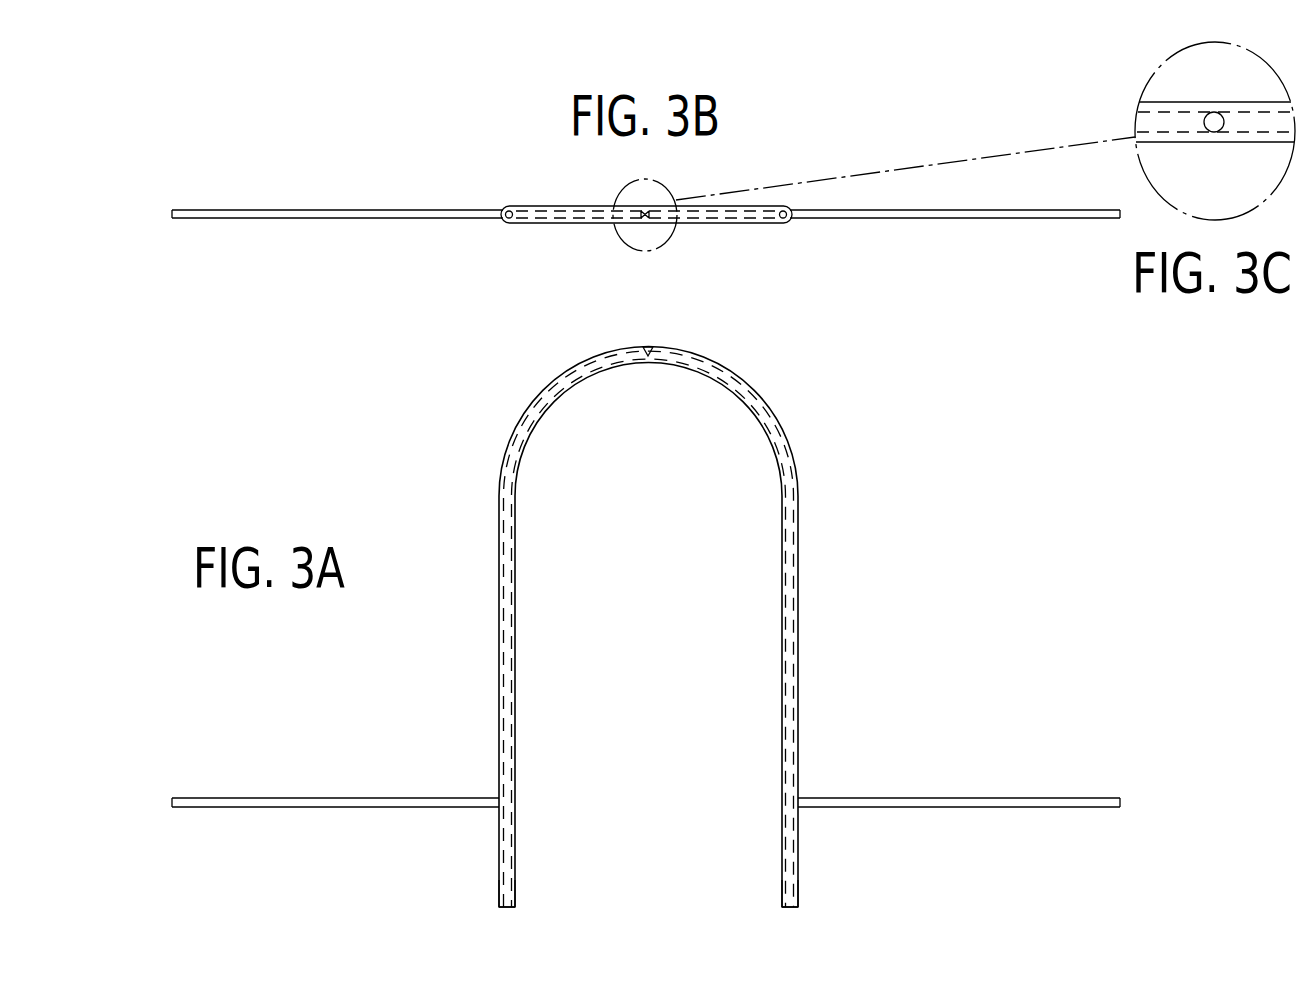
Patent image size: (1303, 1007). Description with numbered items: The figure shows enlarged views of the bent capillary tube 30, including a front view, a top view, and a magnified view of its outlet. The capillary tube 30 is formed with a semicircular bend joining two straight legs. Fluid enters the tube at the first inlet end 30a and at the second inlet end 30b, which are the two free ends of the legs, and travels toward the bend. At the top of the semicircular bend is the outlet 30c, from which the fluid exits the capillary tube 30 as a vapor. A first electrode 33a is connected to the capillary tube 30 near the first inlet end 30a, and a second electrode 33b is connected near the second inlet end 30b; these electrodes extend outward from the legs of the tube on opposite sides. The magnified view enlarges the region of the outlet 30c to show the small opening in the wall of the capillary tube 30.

The bent capillary tube 30 is at (505, 462).
The first inlet end 30a is at (503, 907).
The second inlet end 30b is at (790, 907).
The outlet 30c is at (648, 350).
The first electrode 33a is at (362, 798).
The second electrode 33b is at (937, 797).